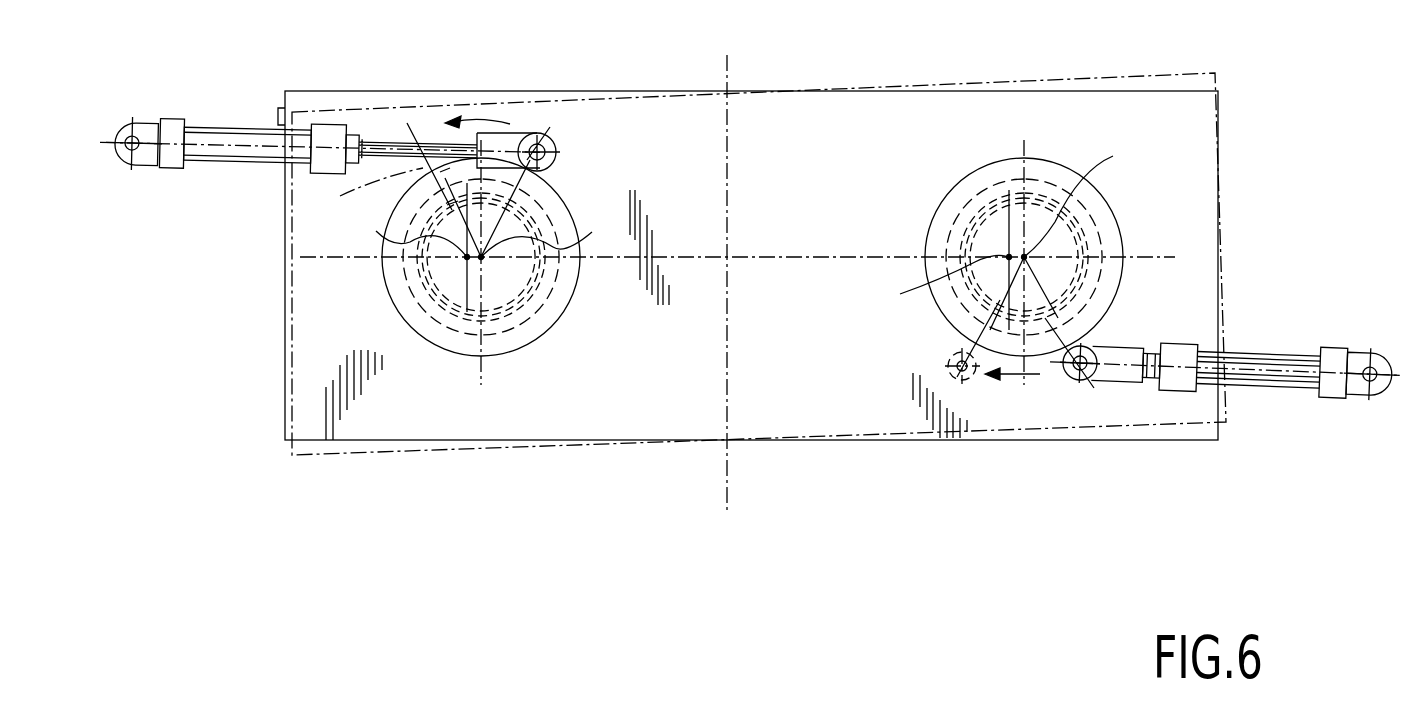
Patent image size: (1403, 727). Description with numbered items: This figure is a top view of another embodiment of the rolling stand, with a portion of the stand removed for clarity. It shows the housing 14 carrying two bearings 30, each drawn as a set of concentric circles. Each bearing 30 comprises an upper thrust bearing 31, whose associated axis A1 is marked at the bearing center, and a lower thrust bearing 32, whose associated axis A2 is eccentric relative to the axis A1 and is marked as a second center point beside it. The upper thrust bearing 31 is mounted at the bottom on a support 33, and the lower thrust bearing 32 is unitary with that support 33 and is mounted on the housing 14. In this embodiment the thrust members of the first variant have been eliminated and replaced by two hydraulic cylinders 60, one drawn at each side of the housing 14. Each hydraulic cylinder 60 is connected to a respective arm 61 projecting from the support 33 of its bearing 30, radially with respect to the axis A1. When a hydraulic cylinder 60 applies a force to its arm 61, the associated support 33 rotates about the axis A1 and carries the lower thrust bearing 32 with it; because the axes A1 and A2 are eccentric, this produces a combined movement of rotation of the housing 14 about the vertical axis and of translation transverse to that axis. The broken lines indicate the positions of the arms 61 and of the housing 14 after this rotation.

The housing 14 is at (897, 128).
The bearing 30 is at (597, 318).
The upper thrust bearing 31 is at (443, 343).
The lower thrust bearing 32 is at (530, 300).
The support 33 is at (565, 208).
The hydraulic cylinder 60 is at (247, 138).
The arm 61 is at (556, 171).
The axis A1 is at (817, 196).
The axis A2 is at (668, 264).